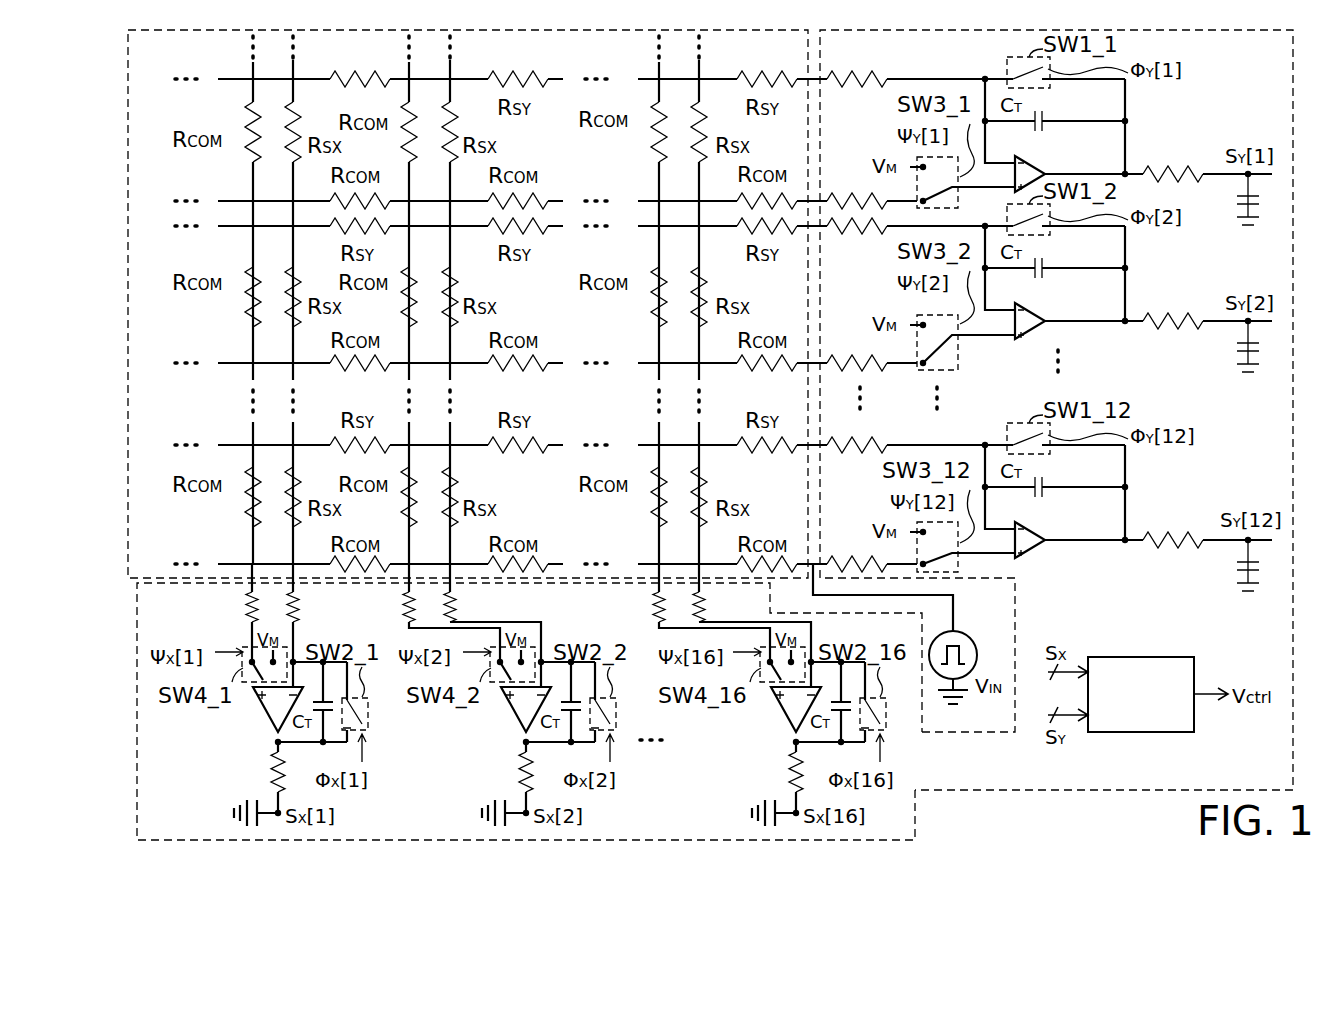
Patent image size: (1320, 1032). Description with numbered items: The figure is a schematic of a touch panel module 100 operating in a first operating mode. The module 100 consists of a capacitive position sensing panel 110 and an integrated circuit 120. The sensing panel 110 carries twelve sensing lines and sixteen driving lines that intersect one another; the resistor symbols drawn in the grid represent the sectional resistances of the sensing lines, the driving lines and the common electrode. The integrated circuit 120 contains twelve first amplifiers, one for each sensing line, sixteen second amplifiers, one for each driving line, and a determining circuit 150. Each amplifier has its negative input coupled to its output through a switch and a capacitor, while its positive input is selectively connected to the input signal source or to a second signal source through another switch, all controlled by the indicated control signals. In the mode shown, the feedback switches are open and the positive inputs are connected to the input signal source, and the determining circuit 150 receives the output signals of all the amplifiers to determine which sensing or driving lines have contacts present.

The touch panel module 100 is at (1003, 797).
The capacitive position sensing panel 110 is at (129, 320).
The integrated circuit 120 is at (137, 715).
The determining circuit 150 is at (1140, 657).